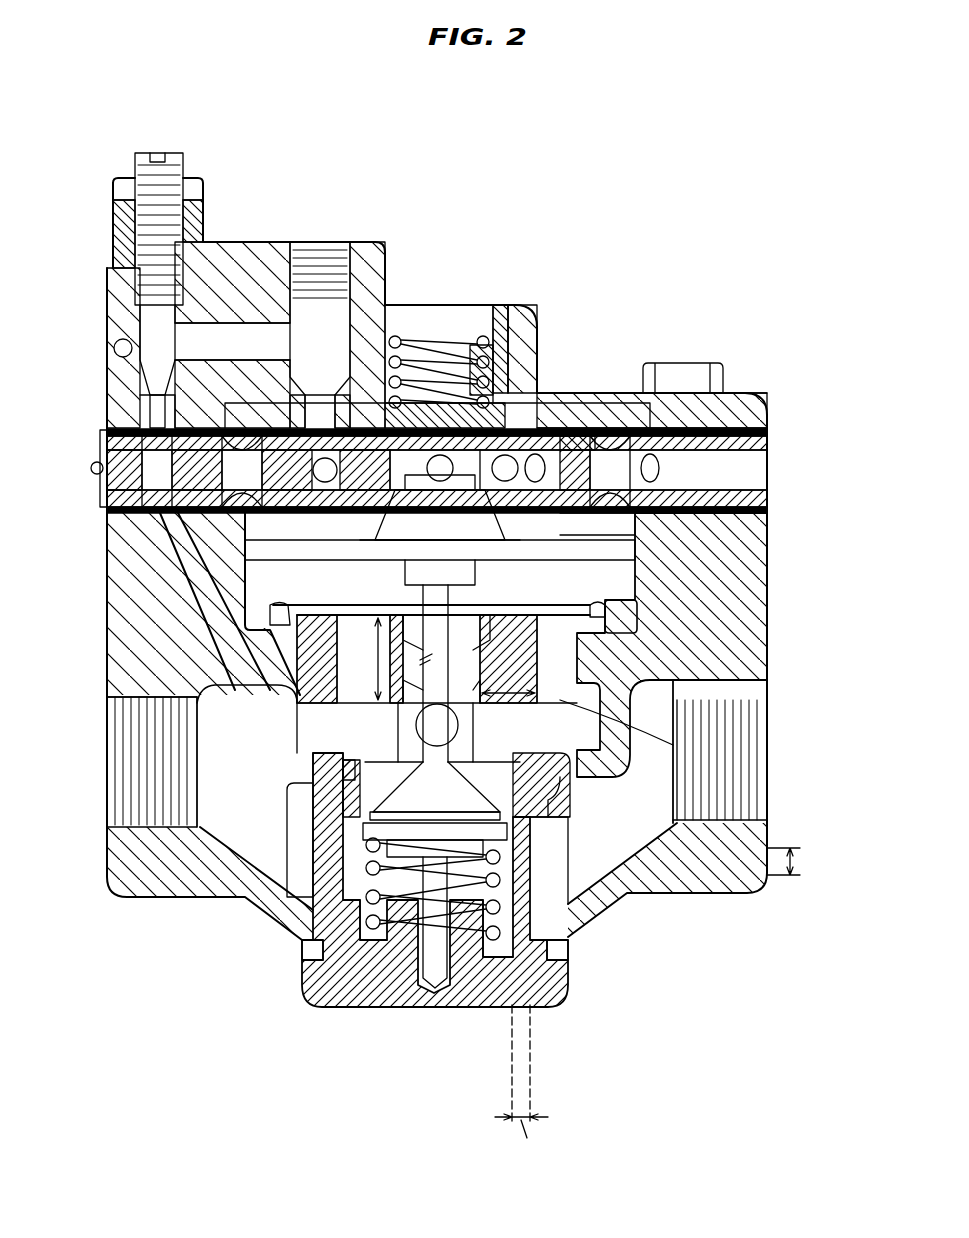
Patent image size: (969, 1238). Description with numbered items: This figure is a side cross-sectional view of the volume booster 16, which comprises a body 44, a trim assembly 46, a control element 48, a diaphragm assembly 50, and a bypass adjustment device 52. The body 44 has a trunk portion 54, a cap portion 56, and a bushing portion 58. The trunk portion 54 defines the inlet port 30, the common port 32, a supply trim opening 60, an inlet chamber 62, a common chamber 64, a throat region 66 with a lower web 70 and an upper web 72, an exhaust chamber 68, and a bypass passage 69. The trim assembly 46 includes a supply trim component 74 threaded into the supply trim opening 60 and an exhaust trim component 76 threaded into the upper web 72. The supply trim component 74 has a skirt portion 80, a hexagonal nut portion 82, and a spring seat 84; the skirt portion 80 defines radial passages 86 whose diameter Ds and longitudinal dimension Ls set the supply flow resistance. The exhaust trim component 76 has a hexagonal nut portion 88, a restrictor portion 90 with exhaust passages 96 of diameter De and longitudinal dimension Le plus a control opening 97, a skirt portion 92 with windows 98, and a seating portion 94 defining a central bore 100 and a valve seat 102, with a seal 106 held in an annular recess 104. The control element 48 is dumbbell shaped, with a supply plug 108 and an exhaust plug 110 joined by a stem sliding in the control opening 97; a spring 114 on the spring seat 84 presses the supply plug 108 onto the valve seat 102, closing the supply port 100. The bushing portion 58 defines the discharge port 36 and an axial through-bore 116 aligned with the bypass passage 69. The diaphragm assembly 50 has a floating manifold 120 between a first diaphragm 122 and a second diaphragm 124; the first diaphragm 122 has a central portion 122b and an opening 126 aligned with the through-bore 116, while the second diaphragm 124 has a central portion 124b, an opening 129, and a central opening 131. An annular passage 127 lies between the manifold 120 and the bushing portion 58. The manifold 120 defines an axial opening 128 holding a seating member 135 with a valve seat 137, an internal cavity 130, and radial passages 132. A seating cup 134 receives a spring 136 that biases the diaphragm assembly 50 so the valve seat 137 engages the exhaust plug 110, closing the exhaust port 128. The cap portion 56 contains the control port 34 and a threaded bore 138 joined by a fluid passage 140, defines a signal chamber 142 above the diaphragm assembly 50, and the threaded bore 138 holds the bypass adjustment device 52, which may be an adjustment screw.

The volume booster 16 is at (726, 260).
The inlet port 30 is at (745, 815).
The common port 32 is at (140, 755).
The control port 34 is at (343, 242).
The discharge port 36 is at (740, 458).
The body 44 is at (755, 602).
The trim assembly 46 is at (690, 733).
The control element 48 is at (600, 650).
The diaphragm assembly 50 is at (585, 440).
The bypass adjustment device 52 is at (182, 130).
The trunk portion 54 is at (740, 622).
The cap portion 56 is at (740, 402).
The bushing portion 58 is at (745, 440).
The supply trim opening 60 is at (335, 930).
The inlet chamber 62 is at (577, 858).
The common chamber 64 is at (247, 762).
The throat region 66 is at (300, 760).
The exhaust chamber 68 is at (597, 547).
The bypass passage 69 is at (210, 628).
The lower web 70 is at (520, 810).
The upper web 72 is at (275, 680).
The supply trim component 74 is at (357, 1020).
The exhaust trim component 76 is at (275, 615).
The skirt portion 80 is at (300, 840).
The hexagonal nut portion 82 is at (562, 985).
The spring seat 84 is at (490, 950).
The passages 86 is at (575, 925).
The hexagonal nut portion 88 is at (612, 612).
The restrictor portion 90 is at (700, 680).
The skirt portion 92 is at (700, 745).
The seating portion 94 is at (700, 780).
The exhaust passages 96 is at (343, 640).
The control opening 97 is at (455, 650).
The windows 98 is at (700, 770).
The central bore 100 is at (400, 960).
The valve seat 102 is at (428, 960).
The external annular recess 104 is at (313, 790).
The seal 106 is at (565, 780).
The supply plug 108 is at (352, 940).
The exhaust plug 110 is at (395, 520).
The spring 114 is at (470, 940).
The axial through-bore 116 is at (150, 443).
The floating manifold 120 is at (555, 410).
The first diaphragm 122 is at (730, 410).
The central portion 122b is at (310, 540).
The second diaphragm 124 is at (730, 505).
The central portion 124b is at (275, 460).
The opening 126 is at (150, 415).
The annular passage 127 is at (185, 480).
The axial opening 128 is at (425, 480).
The opening 129 is at (280, 520).
The internal cavity 130 is at (530, 460).
The central opening 131 is at (400, 545).
The radial passages 132 is at (420, 530).
The seating cup 134 is at (390, 330).
The seating member 135 is at (630, 540).
The spring 136 is at (462, 345).
The valve seat 137 is at (495, 550).
The threaded bore 138 is at (135, 258).
The fluid passage 140 is at (238, 340).
The signal chamber 142 is at (545, 420).
The longitudinal dimension Le is at (363, 659).
The diameter De is at (508, 683).
The diameter Ds is at (801, 860).
The longitudinal dimension Ls is at (521, 1084).